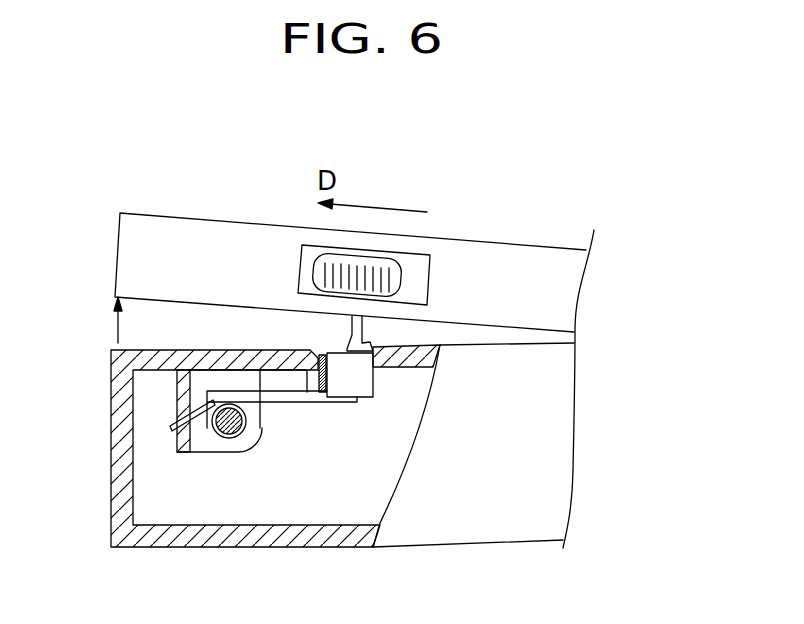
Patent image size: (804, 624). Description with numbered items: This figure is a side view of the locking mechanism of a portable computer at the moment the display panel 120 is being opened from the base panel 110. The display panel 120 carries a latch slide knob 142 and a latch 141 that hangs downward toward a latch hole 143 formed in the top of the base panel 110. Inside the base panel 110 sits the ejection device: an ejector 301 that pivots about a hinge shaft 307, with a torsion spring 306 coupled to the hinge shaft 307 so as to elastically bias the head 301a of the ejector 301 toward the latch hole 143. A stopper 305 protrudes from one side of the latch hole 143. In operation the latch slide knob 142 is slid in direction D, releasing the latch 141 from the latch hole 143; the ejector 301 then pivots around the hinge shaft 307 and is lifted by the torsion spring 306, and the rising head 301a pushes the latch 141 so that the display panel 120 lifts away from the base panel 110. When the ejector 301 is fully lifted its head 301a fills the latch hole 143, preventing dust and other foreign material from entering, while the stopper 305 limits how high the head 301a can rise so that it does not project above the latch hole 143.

The base panel 110 is at (125, 488).
The display panel 120 is at (125, 252).
The latch 141 is at (363, 332).
The latch slide knob 142 is at (387, 270).
The latch hole 143 is at (327, 352).
The ejector 301 is at (375, 398).
The head 301a is at (377, 374).
The stopper 305 is at (313, 377).
The torsion spring 306 is at (333, 403).
The hinge shaft 307 is at (233, 437).